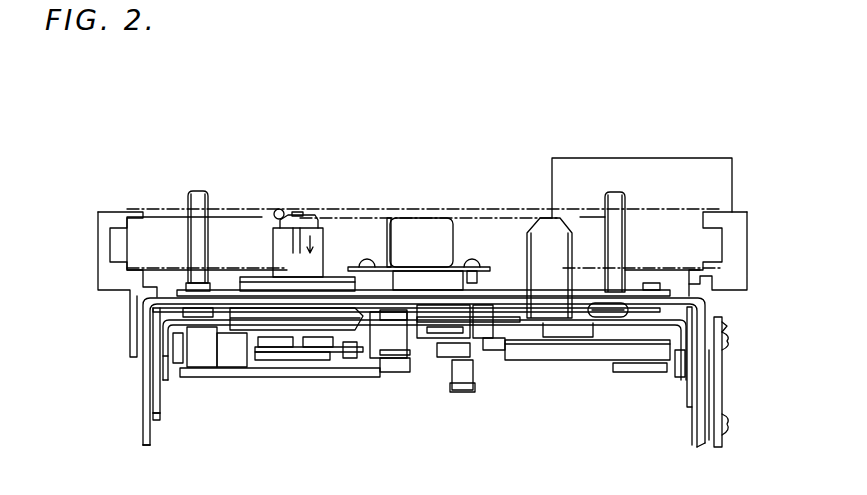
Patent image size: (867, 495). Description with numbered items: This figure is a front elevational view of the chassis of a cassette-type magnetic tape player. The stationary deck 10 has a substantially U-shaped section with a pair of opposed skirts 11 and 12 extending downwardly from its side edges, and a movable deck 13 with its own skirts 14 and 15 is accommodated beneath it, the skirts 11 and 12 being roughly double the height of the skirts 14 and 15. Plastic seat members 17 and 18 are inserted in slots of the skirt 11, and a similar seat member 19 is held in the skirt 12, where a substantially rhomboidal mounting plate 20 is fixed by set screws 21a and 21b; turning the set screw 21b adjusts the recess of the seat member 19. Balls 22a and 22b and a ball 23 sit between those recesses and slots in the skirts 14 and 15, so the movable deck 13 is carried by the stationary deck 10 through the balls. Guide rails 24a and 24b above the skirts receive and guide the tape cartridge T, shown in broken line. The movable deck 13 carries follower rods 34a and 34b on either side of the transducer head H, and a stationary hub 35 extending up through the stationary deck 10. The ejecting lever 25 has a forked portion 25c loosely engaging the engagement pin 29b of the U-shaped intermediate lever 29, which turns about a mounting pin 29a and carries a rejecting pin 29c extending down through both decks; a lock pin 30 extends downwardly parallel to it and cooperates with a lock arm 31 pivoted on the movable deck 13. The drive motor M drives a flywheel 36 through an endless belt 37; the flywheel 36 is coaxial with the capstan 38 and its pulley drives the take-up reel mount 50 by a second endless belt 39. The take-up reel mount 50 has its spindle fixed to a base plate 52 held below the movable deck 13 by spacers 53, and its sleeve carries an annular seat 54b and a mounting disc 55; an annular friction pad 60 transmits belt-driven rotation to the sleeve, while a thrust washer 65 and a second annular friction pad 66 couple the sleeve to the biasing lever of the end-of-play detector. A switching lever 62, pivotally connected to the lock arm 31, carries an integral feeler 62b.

The stationary deck 10 is at (230, 300).
The skirt 11 is at (143, 433).
The skirt 12 is at (692, 423).
The movable deck 13 is at (465, 335).
The skirt 14 is at (170, 380).
The skirt 15 is at (677, 372).
The plastic seat member 17 is at (153, 397).
The plastic seat member 18 is at (156, 416).
The seat member 19 is at (712, 385).
The mounting plate 20 is at (722, 370).
The set screw 21a is at (730, 428).
The set screw 21b is at (726, 327).
The ball 22a is at (160, 352).
The ball 22b is at (162, 356).
The ball 23 is at (726, 340).
The guide rail 24a is at (98, 243).
The guide rail 24b is at (748, 250).
The ejecting lever 25 is at (667, 293).
The forked portion 25c is at (605, 318).
The intermediate lever 29 is at (527, 292).
The mounting pin 29a is at (493, 280).
The engagement pin 29b is at (547, 353).
The rejecting pin 29c is at (485, 345).
The lock pin 30 is at (478, 338).
The lock arm 31 is at (442, 340).
The follower rod 34a is at (192, 190).
The follower rod 34b is at (617, 192).
The stationary hub 35 is at (553, 226).
The flywheel 36 is at (227, 357).
The endless belt 37 is at (545, 360).
The capstan 38 is at (278, 212).
The endless belt 39 is at (243, 330).
The take-up reel mount 50 is at (315, 226).
The base plate 52 is at (397, 372).
The spacers 53 is at (200, 360).
The annular seat 54b is at (340, 283).
The mounting disc 55 is at (278, 360).
The annular friction pad 60 is at (334, 275).
The switching lever 62 is at (430, 347).
The feeler 62b is at (372, 312).
The thrust washer 65 is at (330, 340).
The annular friction pad 66 is at (270, 355).
The transducer head H is at (415, 230).
The drive motor M is at (717, 175).
The tape cartridge T is at (165, 218).